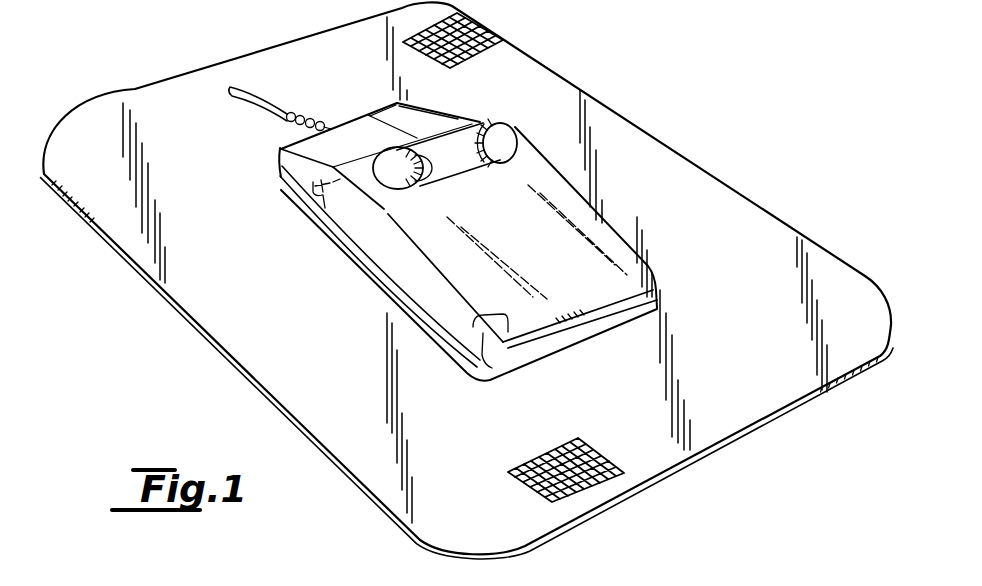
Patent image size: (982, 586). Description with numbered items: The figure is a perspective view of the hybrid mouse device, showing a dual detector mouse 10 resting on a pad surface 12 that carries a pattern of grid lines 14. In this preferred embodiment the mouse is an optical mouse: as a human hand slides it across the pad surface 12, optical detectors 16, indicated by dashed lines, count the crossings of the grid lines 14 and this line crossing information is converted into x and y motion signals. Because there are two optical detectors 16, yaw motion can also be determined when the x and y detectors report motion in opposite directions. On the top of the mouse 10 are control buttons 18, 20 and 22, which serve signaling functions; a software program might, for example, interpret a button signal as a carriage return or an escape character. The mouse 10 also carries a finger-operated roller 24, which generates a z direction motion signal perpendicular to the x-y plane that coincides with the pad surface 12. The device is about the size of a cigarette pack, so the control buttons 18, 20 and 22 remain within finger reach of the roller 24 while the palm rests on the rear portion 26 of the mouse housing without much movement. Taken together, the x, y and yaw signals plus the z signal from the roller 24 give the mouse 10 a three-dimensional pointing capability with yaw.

The dual detector mouse 10 is at (530, 165).
The pad surface 12 is at (643, 150).
The grid lines 14 is at (587, 483).
The optical detectors 16 is at (312, 227).
The control button 18 is at (303, 130).
The control button 20 is at (355, 128).
The control button 22 is at (423, 118).
The finger-operated roller 24 is at (457, 155).
The rear portion of the mouse housing 26 is at (581, 278).